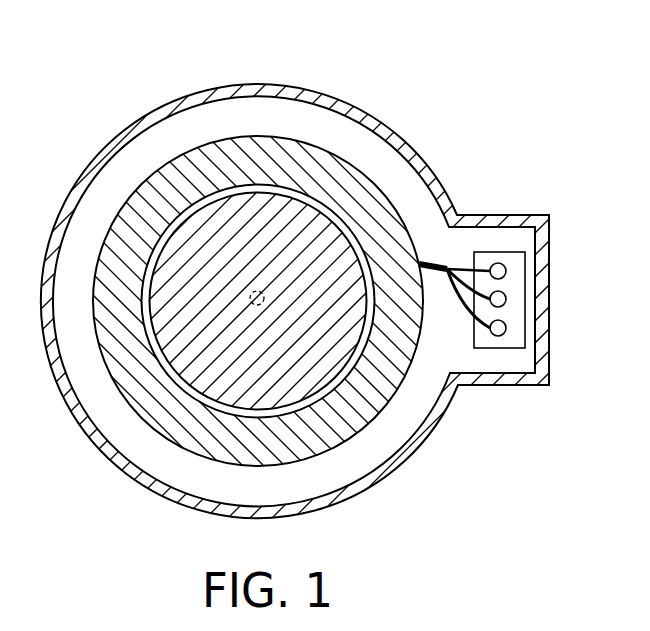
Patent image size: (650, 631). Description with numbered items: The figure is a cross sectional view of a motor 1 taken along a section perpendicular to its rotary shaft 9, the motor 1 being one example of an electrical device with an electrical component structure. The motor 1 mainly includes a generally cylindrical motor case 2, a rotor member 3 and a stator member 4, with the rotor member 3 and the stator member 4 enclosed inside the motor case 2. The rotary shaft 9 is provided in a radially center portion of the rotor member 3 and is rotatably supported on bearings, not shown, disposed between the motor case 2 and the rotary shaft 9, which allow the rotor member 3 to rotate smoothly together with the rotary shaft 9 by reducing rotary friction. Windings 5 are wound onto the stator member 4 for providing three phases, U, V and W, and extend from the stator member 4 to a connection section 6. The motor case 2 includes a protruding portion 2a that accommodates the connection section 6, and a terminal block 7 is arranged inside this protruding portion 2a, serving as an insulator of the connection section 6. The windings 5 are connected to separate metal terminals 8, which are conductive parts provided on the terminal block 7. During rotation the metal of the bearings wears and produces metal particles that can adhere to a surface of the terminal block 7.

The motor 1 is at (105, 77).
The motor case 2 is at (381, 120).
The protruding portion 2a is at (532, 363).
The rotor member 3 is at (263, 213).
The stator member 4 is at (310, 167).
The windings 5 is at (432, 267).
The connection section 6 is at (520, 243).
The terminal block 7 is at (513, 338).
The metal terminals 8 is at (510, 270).
The rotary shaft 9 is at (257, 291).